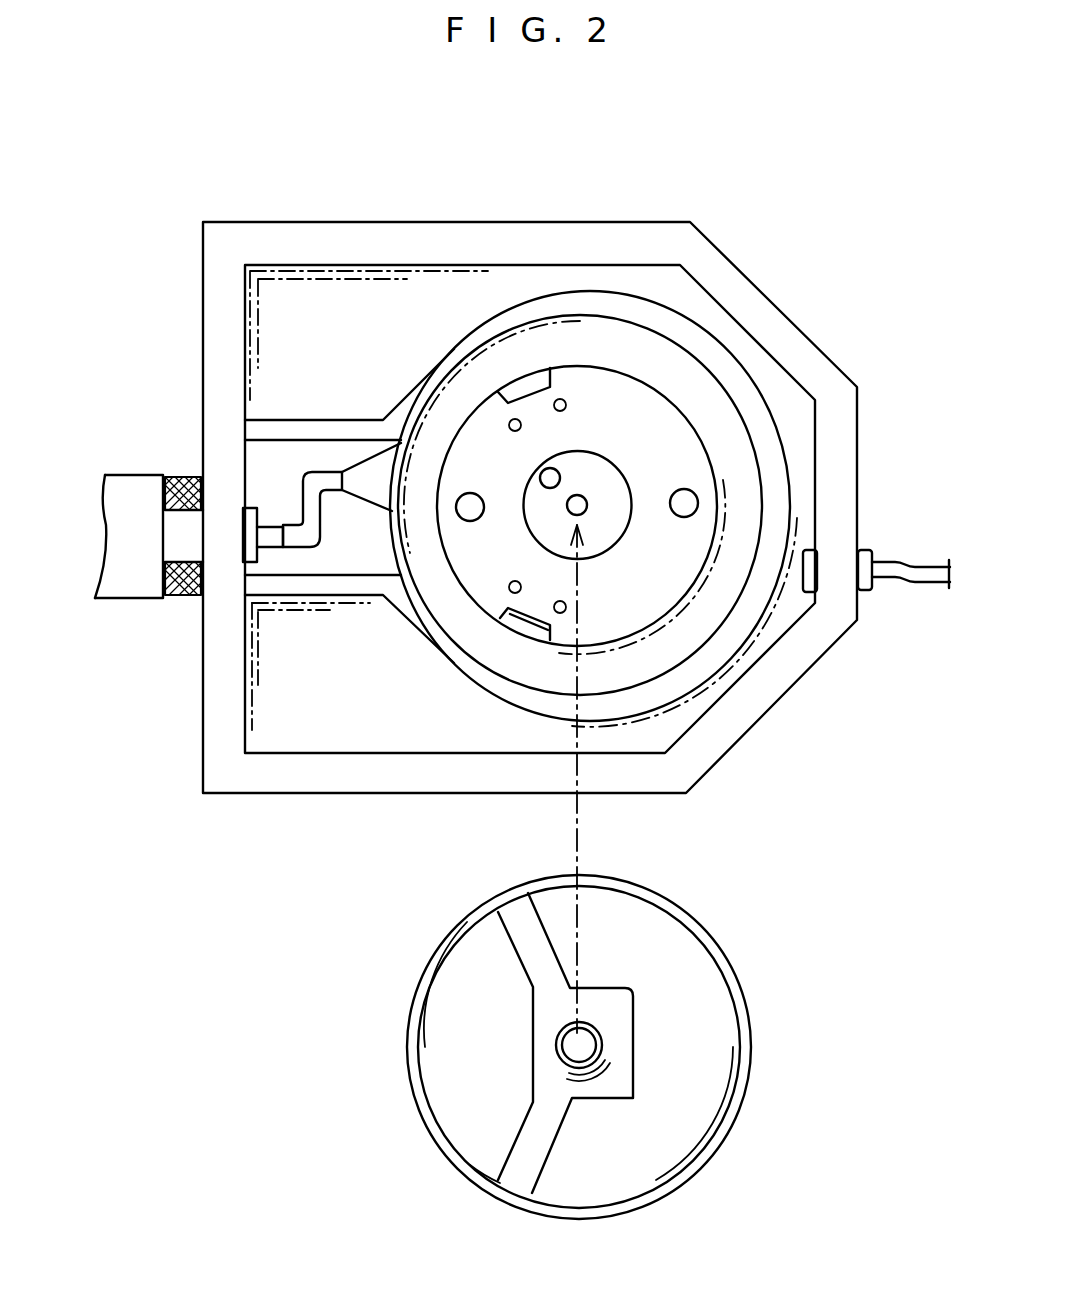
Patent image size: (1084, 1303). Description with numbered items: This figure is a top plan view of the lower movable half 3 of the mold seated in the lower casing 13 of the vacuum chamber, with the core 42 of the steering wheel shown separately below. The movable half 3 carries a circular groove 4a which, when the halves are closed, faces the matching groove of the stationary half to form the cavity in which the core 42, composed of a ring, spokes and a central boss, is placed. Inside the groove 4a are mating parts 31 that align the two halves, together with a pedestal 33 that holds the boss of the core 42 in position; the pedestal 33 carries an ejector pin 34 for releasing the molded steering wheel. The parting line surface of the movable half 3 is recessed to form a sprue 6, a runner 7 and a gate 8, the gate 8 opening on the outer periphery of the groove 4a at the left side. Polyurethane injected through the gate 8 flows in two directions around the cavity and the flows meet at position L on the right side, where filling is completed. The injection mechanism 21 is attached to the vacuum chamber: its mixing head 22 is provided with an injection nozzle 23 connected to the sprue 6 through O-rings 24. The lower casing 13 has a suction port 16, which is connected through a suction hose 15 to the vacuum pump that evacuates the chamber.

The movable half 3 is at (573, 302).
The lower casing 13 is at (636, 236).
The groove 4a is at (688, 370).
The mating parts 31 is at (587, 500).
The pedestal 33 is at (612, 533).
The ejector pin 34 is at (546, 477).
The position L is at (728, 482).
The gate 8 is at (372, 470).
The runner 7 is at (318, 525).
The sprue 6 is at (270, 536).
The injection nozzle 23 is at (247, 503).
The injection mechanism 21 is at (107, 466).
The mixing head 22 is at (115, 590).
The O-rings 24 is at (190, 597).
The suction port 16 is at (810, 585).
The suction hose 15 is at (907, 572).
The core 42 is at (717, 952).